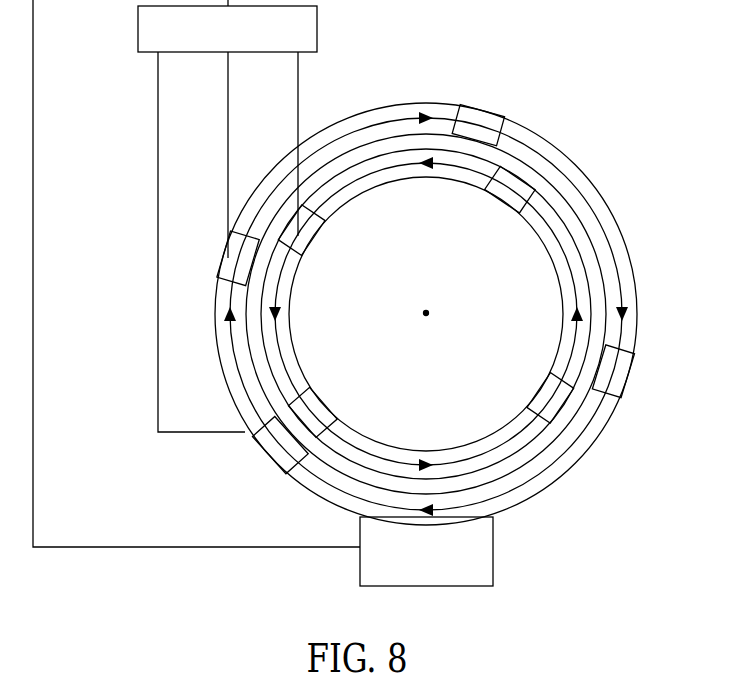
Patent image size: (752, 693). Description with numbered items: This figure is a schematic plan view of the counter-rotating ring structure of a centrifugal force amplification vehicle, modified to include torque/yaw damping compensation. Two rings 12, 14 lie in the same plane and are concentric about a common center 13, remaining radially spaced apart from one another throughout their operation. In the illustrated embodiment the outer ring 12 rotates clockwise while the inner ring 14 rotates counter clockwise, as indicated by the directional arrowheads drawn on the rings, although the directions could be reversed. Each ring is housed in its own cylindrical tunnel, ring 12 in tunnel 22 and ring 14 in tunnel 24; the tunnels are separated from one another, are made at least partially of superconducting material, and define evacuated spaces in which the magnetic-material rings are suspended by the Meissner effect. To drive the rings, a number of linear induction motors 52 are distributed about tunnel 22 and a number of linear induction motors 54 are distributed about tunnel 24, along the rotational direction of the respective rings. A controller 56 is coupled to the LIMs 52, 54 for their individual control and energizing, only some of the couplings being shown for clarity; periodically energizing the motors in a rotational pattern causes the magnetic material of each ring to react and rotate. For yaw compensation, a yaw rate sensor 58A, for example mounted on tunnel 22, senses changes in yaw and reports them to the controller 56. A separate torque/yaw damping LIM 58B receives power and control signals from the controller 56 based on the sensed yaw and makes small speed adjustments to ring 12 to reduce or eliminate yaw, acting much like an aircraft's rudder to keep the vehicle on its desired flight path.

The ring 12 is at (590, 424).
The common center 13 is at (430, 308).
The ring 14 is at (291, 276).
The tunnel 22 is at (552, 478).
The tunnel 24 is at (441, 447).
The linear induction motors 52 is at (473, 108).
The linear induction motors 54 is at (320, 230).
The controller 56 is at (138, 33).
The yaw rate sensor 58A is at (497, 548).
The torque/yaw damping LIM 58B is at (258, 448).